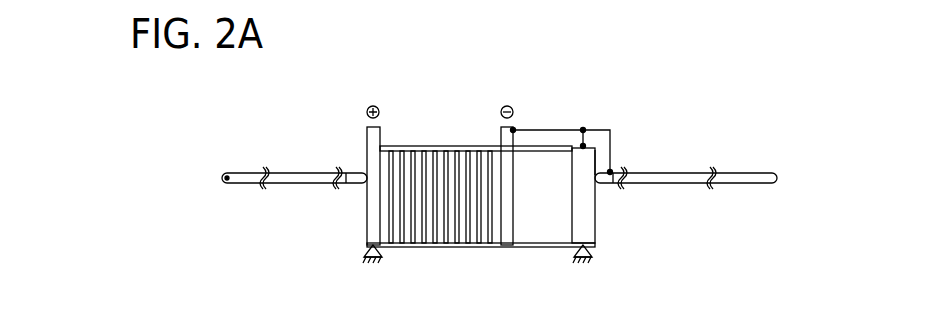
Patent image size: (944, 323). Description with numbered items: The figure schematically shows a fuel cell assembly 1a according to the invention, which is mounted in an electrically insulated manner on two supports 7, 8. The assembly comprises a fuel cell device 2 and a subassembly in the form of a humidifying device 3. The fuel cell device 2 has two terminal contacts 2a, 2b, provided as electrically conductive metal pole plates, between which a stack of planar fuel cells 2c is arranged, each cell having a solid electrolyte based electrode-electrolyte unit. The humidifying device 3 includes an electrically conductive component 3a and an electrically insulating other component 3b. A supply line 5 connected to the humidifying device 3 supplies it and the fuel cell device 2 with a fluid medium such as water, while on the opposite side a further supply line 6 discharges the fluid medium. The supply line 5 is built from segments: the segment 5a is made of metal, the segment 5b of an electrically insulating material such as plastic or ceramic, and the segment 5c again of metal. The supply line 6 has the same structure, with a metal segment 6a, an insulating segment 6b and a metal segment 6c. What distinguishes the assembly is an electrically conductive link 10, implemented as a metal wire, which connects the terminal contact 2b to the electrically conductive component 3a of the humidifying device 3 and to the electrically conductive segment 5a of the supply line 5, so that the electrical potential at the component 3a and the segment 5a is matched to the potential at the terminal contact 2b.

The fuel cell assembly 1a is at (466, 124).
The fuel cell device 2 is at (452, 146).
The terminal contact 2a is at (378, 127).
The terminal contact 2b is at (512, 127).
The stack of planar fuel cells 2c is at (448, 247).
The humidifying device 3 is at (553, 247).
The electrically conductive component 3a is at (600, 160).
The electrically insulating component 3b is at (525, 247).
The supply line 5 is at (683, 183).
The segment 5a is at (613, 183).
The segment 5b is at (655, 183).
The segment 5c is at (730, 183).
The supply line 6 is at (275, 183).
The segment 6a is at (348, 183).
The segment 6b is at (303, 183).
The segment 6c is at (238, 183).
The support 7 is at (592, 258).
The support 8 is at (366, 258).
The electrically conductive link 10 is at (565, 130).